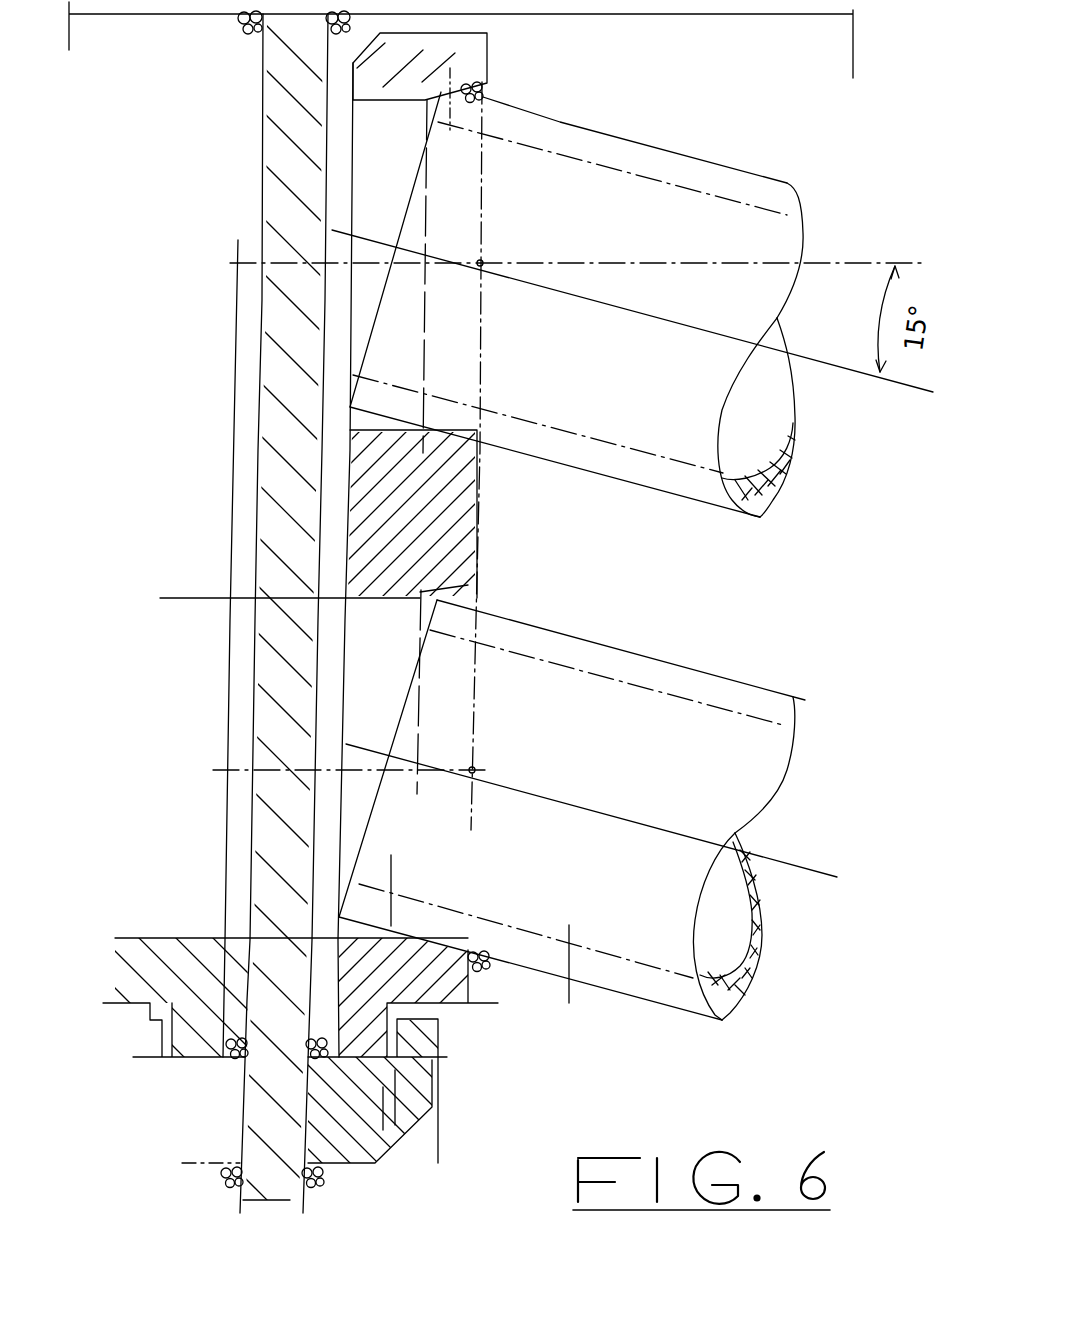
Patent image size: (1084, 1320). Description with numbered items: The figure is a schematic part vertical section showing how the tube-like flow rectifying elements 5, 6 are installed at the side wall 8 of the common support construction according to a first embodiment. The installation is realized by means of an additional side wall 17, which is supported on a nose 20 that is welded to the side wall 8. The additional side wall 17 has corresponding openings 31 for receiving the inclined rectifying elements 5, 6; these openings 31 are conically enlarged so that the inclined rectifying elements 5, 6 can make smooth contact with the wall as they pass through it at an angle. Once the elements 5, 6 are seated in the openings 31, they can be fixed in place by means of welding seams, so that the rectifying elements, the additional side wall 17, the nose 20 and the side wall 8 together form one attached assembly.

The flow rectifying element 5 is at (727, 183).
The flow rectifying element 6 is at (615, 705).
The side wall 8 is at (277, 472).
The additional side wall 17 is at (470, 556).
The nose 20 is at (380, 1140).
The openings 31 is at (383, 182).